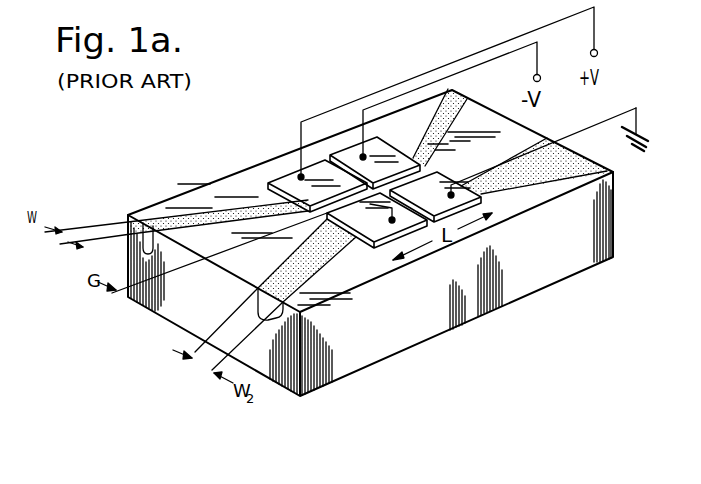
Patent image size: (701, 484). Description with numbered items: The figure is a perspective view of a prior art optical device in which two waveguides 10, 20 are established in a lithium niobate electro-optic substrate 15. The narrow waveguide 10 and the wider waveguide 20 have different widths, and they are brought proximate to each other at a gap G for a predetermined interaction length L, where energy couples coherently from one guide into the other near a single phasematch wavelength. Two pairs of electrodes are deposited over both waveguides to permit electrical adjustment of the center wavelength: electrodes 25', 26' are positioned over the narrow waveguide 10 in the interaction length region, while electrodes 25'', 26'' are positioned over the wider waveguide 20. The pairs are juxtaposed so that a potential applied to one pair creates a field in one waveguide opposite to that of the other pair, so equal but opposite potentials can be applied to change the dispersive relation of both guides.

The waveguide 10 is at (465, 98).
The lithium niobate electro-optic substrate 15 is at (300, 396).
The waveguide 20 is at (550, 166).
The electrode 25' is at (300, 176).
The electrode 26' is at (374, 137).
The electrode 25'' is at (377, 239).
The electrode 26'' is at (513, 165).